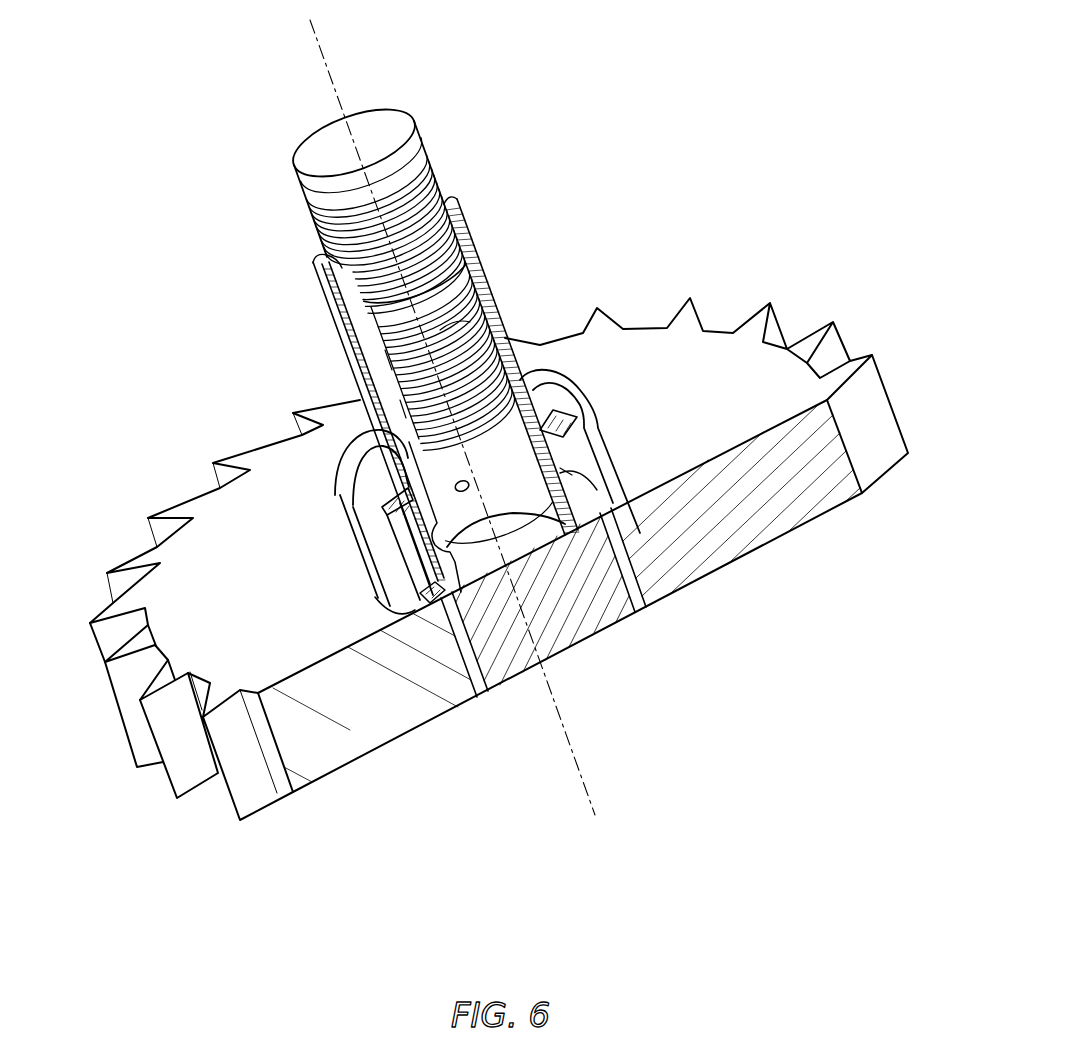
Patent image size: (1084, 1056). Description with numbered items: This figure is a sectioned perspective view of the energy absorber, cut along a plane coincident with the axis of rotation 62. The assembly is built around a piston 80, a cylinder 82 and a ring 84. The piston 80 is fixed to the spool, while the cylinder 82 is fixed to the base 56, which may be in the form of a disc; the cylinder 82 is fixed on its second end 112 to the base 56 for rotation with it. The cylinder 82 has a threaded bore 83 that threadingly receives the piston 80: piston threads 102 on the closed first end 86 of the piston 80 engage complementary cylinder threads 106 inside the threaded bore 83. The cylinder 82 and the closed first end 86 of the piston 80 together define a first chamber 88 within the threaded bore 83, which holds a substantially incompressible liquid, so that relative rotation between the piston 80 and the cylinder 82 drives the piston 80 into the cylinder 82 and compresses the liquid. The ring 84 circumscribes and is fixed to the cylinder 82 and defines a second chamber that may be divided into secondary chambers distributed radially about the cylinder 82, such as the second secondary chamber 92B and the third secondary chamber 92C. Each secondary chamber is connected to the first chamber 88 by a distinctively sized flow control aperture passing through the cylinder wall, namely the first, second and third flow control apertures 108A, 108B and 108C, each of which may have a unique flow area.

The base 56 is at (718, 325).
The axis 62 is at (323, 61).
The piston 80 is at (300, 187).
The cylinder 82 is at (475, 247).
The threaded bore 83 is at (440, 332).
The ring 84 is at (357, 552).
The closed first end 86 is at (385, 350).
The first chamber 88 is at (400, 400).
The second secondary chamber 92B is at (580, 490).
The third secondary chamber 92C is at (400, 577).
The piston threads 102 is at (430, 163).
The cylinder threads 106 is at (405, 378).
The first flow control aperture 108A is at (469, 489).
The second flow control aperture 108B is at (568, 468).
The third flow control aperture 108C is at (430, 558).
The second end 112 is at (572, 652).